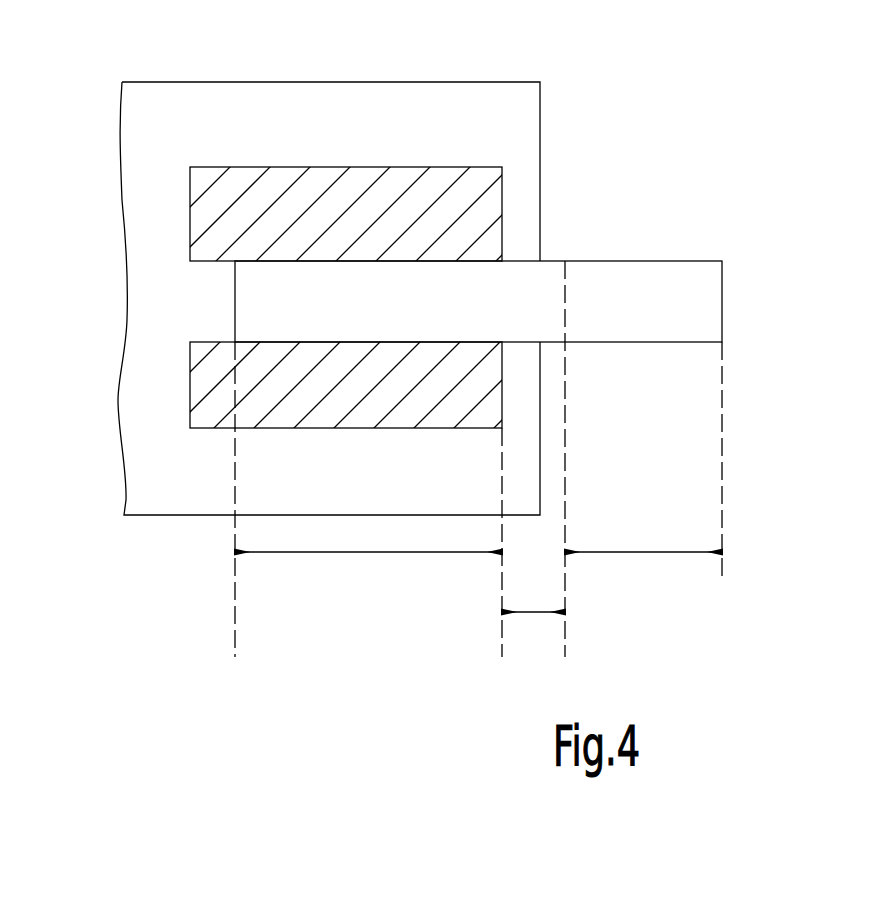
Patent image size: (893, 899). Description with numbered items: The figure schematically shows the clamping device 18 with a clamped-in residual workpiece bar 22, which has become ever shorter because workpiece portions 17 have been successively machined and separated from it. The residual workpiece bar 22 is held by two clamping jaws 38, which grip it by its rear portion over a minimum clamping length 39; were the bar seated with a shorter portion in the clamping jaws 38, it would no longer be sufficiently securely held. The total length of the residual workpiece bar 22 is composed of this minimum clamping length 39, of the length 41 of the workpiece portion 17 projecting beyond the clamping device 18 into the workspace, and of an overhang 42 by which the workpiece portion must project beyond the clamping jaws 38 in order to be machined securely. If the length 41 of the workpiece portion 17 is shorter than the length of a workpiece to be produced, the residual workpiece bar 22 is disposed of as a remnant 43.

The workpiece portion 17 is at (629, 290).
The clamping device 18 is at (292, 120).
The workpiece bar 22 is at (255, 307).
The clamping jaws 38 is at (367, 183).
The minimum clamping length 39 is at (367, 555).
The length of the workpiece portion 41 is at (634, 555).
The overhang 42 is at (530, 615).
The remnant 43 is at (577, 215).